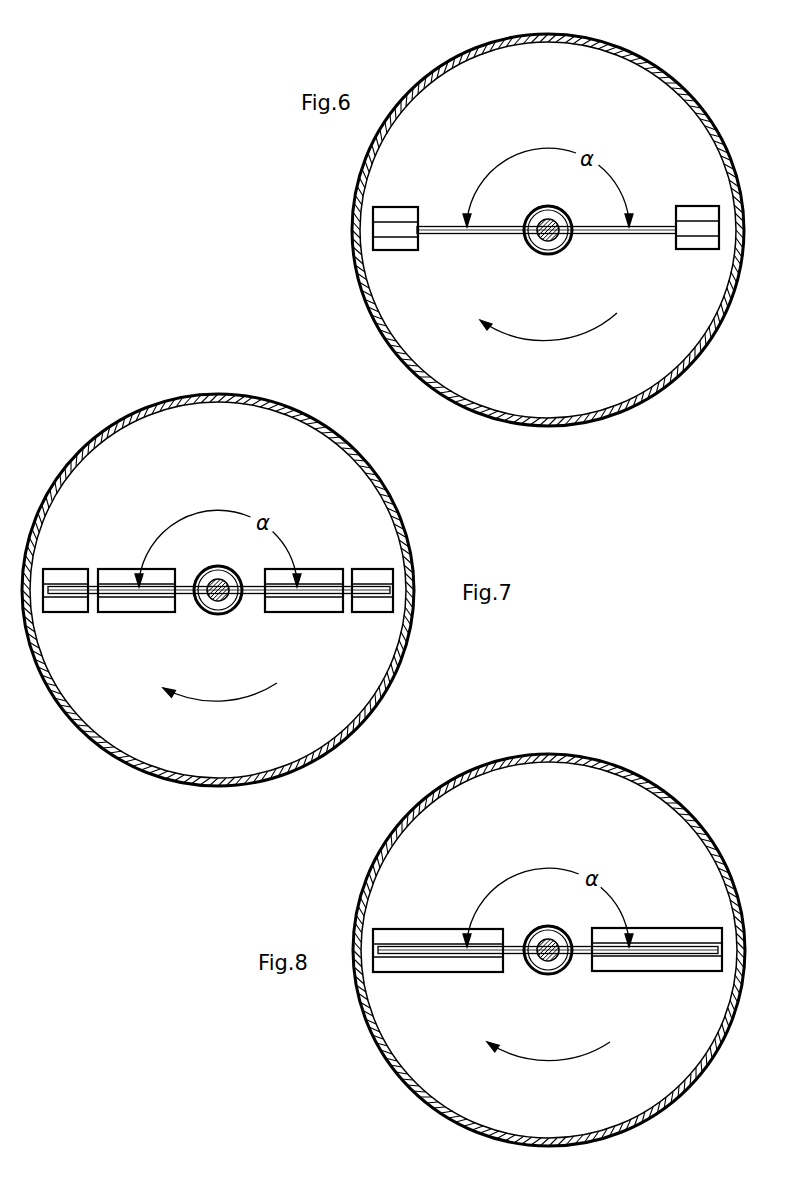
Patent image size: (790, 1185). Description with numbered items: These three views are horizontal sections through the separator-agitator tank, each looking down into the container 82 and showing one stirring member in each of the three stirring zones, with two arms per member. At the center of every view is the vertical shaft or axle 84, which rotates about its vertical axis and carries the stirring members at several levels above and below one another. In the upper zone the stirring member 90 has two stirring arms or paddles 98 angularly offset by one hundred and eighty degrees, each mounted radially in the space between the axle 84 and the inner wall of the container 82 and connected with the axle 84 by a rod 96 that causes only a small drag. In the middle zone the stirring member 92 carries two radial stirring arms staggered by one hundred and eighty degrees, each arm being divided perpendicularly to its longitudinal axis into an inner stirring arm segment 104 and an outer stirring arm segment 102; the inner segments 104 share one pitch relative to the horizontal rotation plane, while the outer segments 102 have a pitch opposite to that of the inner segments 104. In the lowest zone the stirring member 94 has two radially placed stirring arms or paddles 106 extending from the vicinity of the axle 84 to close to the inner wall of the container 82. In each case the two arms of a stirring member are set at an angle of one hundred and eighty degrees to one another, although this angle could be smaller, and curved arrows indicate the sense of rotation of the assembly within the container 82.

In FIG. 6, the container 82 is at (673, 373).
In FIG. 7, the container 82 is at (117, 428).
In FIG. 8, the container 82 is at (658, 790).
In FIG. 6, the shaft 84 is at (553, 238).
In FIG. 7, the shaft 84 is at (230, 600).
In FIG. 8, the shaft 84 is at (548, 967).
In FIG. 6, the stirring member 90 is at (543, 252).
In FIG. 7, the stirring member 92 is at (218, 612).
In FIG. 8, the stirring member 94 is at (566, 934).
In FIG. 6, the rod 96 is at (447, 233).
In FIG. 7, the rod 96 is at (183, 585).
In FIG. 8, the rod 96 is at (513, 946).
In FIG. 6, the stirring arm 98 is at (403, 215).
In FIG. 7, the outer stirring arm segment 102 is at (68, 578).
In FIG. 7, the inner stirring arm segment 104 is at (125, 603).
In FIG. 8, the stirring arm 106 is at (415, 937).